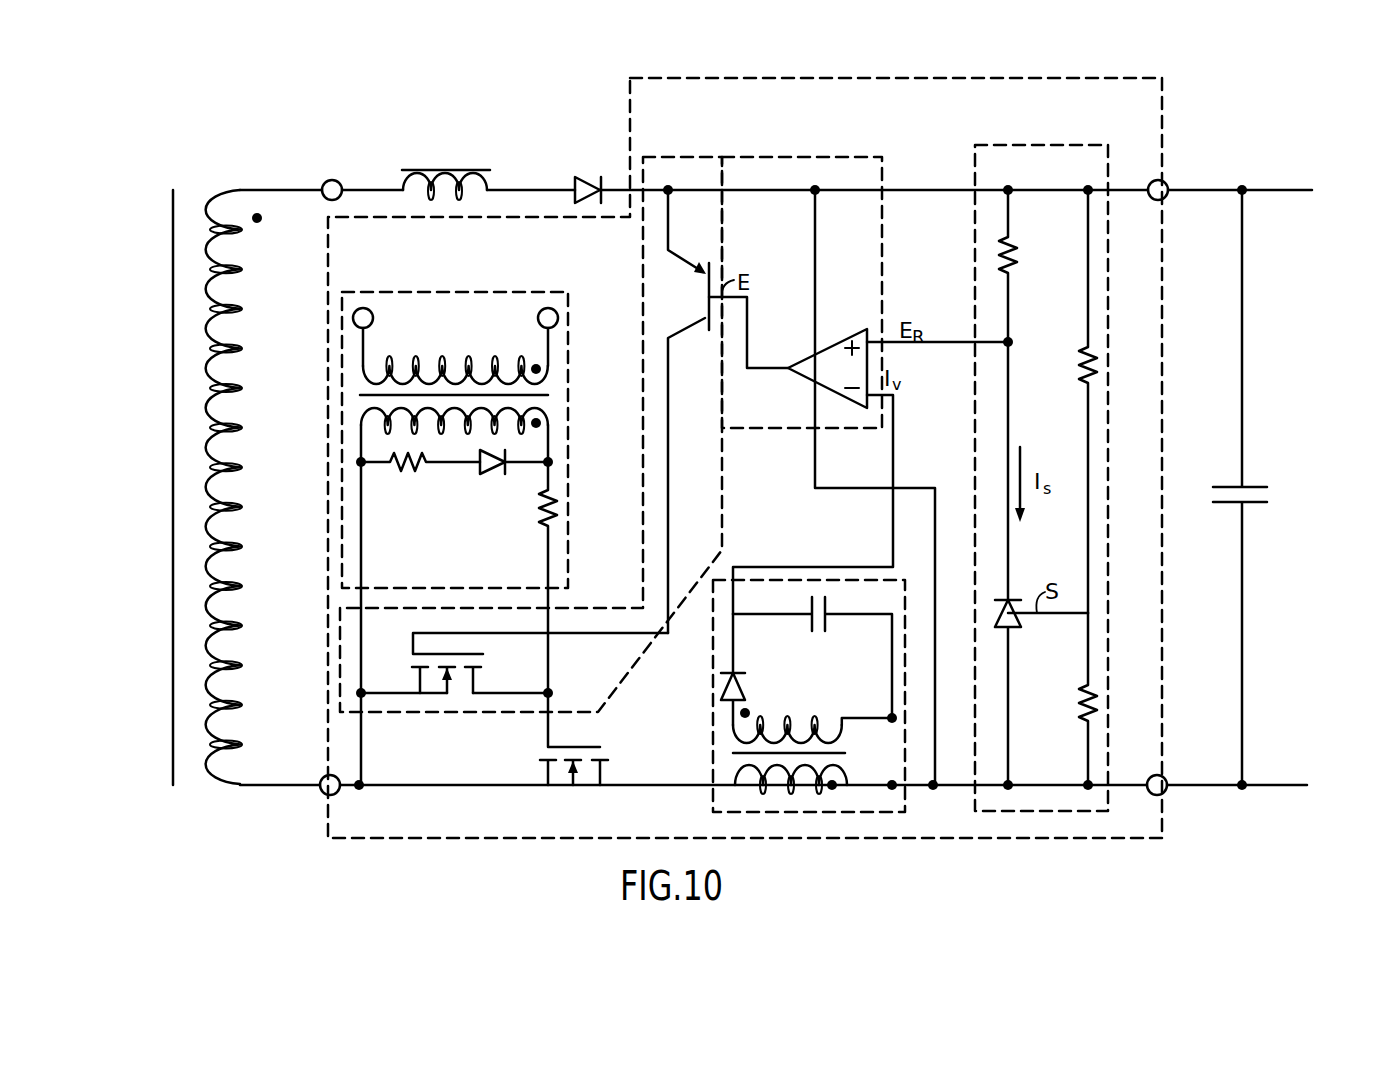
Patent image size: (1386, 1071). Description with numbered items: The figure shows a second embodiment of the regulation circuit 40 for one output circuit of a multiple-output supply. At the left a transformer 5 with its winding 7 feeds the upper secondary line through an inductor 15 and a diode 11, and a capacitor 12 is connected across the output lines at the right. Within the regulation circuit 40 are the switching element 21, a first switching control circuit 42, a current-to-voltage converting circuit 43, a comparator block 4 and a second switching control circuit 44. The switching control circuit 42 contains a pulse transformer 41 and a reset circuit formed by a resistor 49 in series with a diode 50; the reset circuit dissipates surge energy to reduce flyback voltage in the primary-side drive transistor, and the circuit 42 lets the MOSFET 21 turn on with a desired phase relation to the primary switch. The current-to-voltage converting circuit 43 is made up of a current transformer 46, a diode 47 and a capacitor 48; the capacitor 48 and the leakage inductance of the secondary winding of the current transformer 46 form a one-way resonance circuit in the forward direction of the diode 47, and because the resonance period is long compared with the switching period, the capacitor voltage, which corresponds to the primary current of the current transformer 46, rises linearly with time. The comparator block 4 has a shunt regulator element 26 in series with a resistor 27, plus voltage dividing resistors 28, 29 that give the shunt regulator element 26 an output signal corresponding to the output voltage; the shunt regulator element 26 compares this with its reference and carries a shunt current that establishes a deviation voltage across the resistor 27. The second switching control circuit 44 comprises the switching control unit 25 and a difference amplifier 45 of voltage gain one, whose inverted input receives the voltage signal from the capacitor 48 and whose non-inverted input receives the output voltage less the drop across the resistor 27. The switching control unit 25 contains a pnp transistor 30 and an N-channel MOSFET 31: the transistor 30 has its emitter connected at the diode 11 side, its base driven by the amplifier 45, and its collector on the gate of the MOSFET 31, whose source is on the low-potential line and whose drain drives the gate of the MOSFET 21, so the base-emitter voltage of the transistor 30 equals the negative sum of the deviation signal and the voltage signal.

The voltage sensing network 4 is at (975, 230).
The transformer 5 is at (178, 191).
The primary winding 7 is at (232, 491).
The diode 11 is at (578, 178).
The output capacitor 12 is at (1268, 495).
The inductor 15 is at (430, 170).
The switching element 21 is at (600, 751).
The switching control unit 25 is at (705, 156).
The shunt regulator element 26 is at (995, 621).
The resistor 27 is at (1014, 258).
The voltage dividing resistor 28 is at (1082, 370).
The voltage dividing resistor 29 is at (1079, 706).
The pnp transistor 30 is at (707, 298).
The N-channel MOSFET 31 is at (478, 666).
The regulation circuit 40 is at (712, 78).
The pulse transformer 41 is at (360, 395).
The switching control circuit 42 is at (568, 318).
The current-to-voltage converting circuit 43 is at (770, 813).
The switching control circuit 44 is at (779, 150).
The difference amplifier 45 is at (831, 344).
The current transformer 46 is at (843, 748).
The diode 47 is at (746, 686).
The capacitor 48 is at (820, 633).
The resistor 49 is at (404, 472).
The diode 50 is at (488, 472).